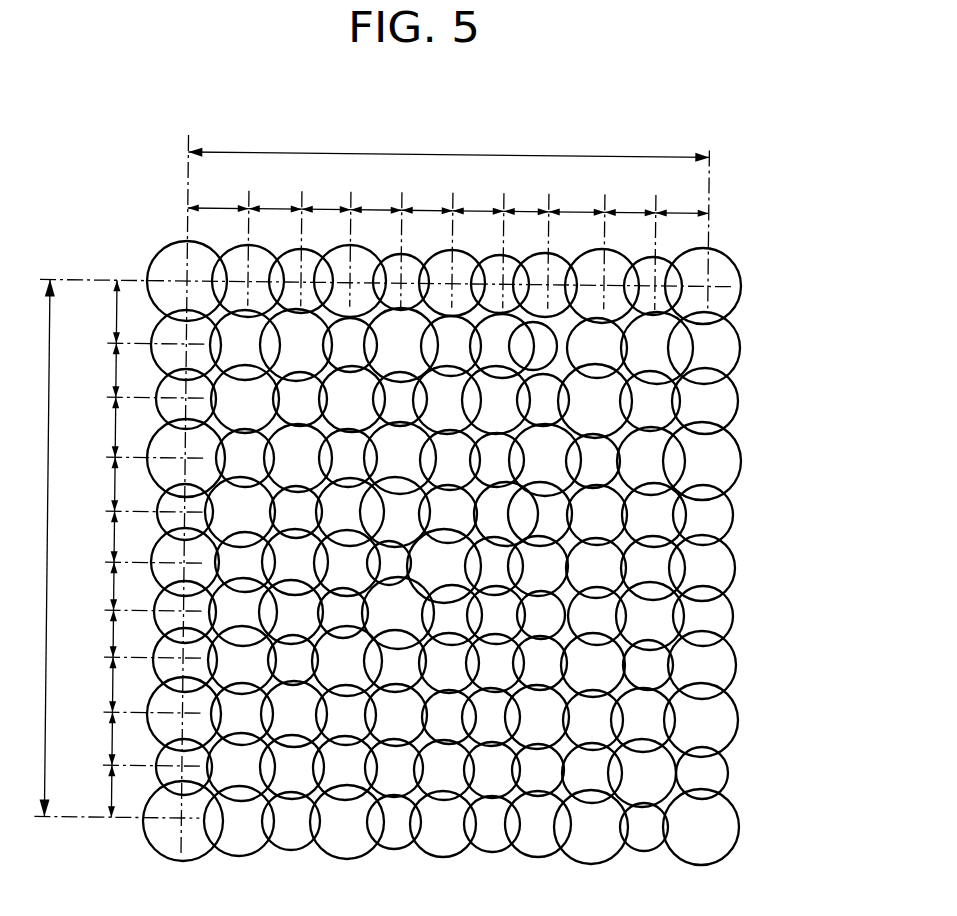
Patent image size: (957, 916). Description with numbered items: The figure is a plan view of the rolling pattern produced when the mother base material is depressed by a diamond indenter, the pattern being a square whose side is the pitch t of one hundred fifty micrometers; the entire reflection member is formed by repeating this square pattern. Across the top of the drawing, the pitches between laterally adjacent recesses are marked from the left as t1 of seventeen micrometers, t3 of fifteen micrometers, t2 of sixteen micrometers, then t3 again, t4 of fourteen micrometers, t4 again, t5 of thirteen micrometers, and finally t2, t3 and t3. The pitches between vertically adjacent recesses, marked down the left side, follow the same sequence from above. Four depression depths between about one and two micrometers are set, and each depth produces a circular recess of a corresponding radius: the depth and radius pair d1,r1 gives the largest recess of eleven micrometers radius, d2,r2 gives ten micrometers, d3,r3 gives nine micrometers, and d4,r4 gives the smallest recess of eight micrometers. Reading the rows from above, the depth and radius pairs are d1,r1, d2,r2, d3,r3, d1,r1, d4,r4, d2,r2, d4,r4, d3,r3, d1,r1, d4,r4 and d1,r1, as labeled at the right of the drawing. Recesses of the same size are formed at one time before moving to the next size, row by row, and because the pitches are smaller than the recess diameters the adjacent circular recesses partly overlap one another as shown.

The depth d1 and radius r1 of circular recess d1,r1 is at (733, 272).
The depth d2 and radius r2 of circular recess d2,r2 is at (728, 348).
The depth d3 and radius r3 of circular recess d3,r3 is at (725, 405).
The depth d4 and radius r4 of circular recess d4,r4 is at (725, 521).
The rolling pattern size t is at (365, 471).
The pitch t1 is at (167, 258).
The pitch t2 is at (343, 444).
The pitch t3 is at (395, 497).
The pitch t4 is at (294, 393).
The pitch t5 is at (316, 417).